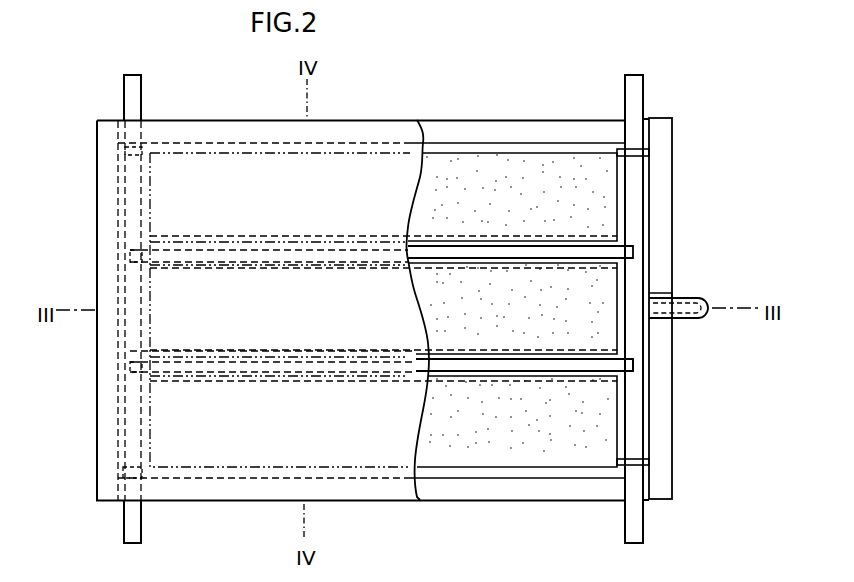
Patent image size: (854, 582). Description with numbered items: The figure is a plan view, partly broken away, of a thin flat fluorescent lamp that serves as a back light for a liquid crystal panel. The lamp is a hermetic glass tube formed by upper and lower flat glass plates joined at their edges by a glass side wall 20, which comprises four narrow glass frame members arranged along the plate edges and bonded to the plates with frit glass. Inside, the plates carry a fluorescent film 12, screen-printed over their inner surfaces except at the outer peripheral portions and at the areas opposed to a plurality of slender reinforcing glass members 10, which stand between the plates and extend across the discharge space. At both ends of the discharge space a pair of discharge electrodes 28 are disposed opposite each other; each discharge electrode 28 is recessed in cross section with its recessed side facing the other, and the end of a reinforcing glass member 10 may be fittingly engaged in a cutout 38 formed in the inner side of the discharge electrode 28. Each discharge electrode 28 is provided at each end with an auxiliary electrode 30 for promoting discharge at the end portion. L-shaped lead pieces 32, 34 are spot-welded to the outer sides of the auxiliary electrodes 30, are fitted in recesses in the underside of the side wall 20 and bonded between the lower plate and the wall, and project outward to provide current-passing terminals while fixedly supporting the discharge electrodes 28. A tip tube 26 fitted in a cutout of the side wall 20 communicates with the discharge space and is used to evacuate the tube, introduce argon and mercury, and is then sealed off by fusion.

The reinforcing glass member 10 is at (498, 253).
The fluorescent film 12 is at (491, 177).
The glass side wall 20 is at (447, 135).
The tip tube 26 is at (686, 297).
The discharge electrode 28 is at (633, 207).
The auxiliary electrode 30 is at (634, 156).
The lead piece 32 is at (131, 103).
The lead piece 34 is at (135, 527).
The cutout 38 is at (633, 349).